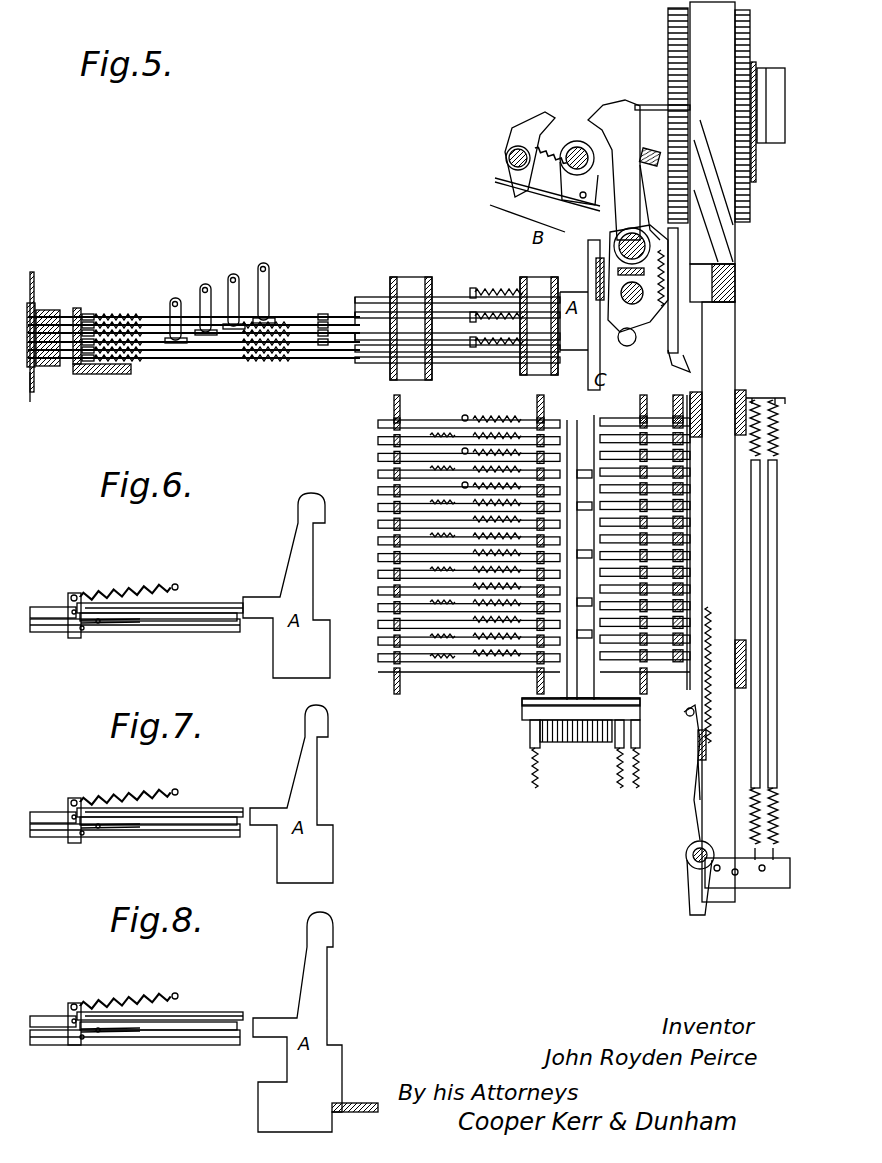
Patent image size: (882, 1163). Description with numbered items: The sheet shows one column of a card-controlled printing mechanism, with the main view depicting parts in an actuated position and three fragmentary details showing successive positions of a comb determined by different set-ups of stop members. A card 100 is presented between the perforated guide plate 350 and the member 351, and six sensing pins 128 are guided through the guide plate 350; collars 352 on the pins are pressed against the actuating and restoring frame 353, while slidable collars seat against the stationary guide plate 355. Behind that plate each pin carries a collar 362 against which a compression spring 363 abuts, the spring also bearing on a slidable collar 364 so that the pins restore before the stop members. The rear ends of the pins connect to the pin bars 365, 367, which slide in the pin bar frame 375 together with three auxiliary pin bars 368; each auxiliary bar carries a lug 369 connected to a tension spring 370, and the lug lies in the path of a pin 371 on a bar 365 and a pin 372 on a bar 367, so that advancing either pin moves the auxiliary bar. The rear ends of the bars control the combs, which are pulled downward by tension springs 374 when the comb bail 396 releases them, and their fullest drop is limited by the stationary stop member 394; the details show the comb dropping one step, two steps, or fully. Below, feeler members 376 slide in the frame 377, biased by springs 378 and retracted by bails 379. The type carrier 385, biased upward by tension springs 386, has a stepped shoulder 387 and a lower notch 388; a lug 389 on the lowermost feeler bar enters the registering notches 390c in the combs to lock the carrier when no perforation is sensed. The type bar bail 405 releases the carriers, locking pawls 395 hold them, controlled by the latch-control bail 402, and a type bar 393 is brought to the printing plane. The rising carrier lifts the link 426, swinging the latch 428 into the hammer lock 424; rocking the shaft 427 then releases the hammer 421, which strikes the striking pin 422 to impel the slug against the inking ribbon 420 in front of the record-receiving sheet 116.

In FIG. 5, the card 100 is at (36, 392).
In FIG. 5, the record-receiving card or sheet 116 is at (756, 182).
In FIG. 5, the pins 128 is at (82, 316).
In FIG. 5, the perforated guide plate 350 is at (48, 366).
In FIG. 5, the member 351 is at (25, 300).
In FIG. 5, the collars 352 is at (98, 318).
In FIG. 5, the actuating and restoring frame 353 is at (112, 374).
In FIG. 5, the stationary guide plate 355 is at (82, 310).
In FIG. 5, the collar 362 is at (320, 316).
In FIG. 5, the compression spring 363 is at (300, 352).
In FIG. 5, the slidable collar 364 is at (342, 318).
In FIG. 5, the pin bars 365 is at (450, 340).
In FIG. 6, the pin bars 365 is at (55, 620).
In FIG. 7, the pin bars 365 is at (60, 826).
In FIG. 8, the pin bars 365 is at (185, 1032).
In FIG. 5, the pin bars 367 is at (520, 360).
In FIG. 6, the pin bars 367 is at (195, 632).
In FIG. 7, the pin bars 367 is at (250, 838).
In FIG. 8, the pin bars 367 is at (215, 1042).
In FIG. 5, the auxiliary pin bars 368 is at (486, 340).
In FIG. 6, the auxiliary pin bars 368 is at (212, 603).
In FIG. 7, the auxiliary pin bars 368 is at (215, 808).
In FIG. 8, the auxiliary pin bars 368 is at (240, 1012).
In FIG. 6, the lug 369 is at (70, 596).
In FIG. 7, the lug 369 is at (72, 801).
In FIG. 8, the lug 369 is at (72, 1005).
In FIG. 5, the tension springs 370 is at (485, 418).
In FIG. 6, the tension springs 370 is at (155, 585).
In FIG. 7, the tension springs 370 is at (160, 788).
In FIG. 8, the tension springs 370 is at (160, 992).
In FIG. 6, the pin 371 is at (105, 622).
In FIG. 7, the pin 371 is at (105, 828).
In FIG. 8, the pin 371 is at (105, 1032).
In FIG. 6, the pin 372 is at (85, 640).
In FIG. 7, the pin 372 is at (85, 844).
In FIG. 8, the pin 372 is at (90, 1046).
In FIG. 5, the tension springs 374 is at (535, 788).
In FIG. 5, the pin bar frame 375 is at (398, 278).
In FIG. 5, the feeler members 376 is at (438, 630).
In FIG. 5, the frame 377 is at (396, 694).
In FIG. 5, the springs 378 is at (492, 630).
In FIG. 5, the bails 379 is at (460, 451).
In FIG. 5, the type carrier 385 is at (726, 348).
In FIG. 5, the tension springs 386 is at (780, 860).
In FIG. 5, the stepped shoulder 387 is at (703, 520).
In FIG. 5, the lower notch 388 is at (705, 550).
In FIG. 5, the lug 389 is at (665, 672).
In FIG. 5, the notches 390c is at (585, 690).
In FIG. 5, the type bars 393 is at (735, 100).
In FIG. 8, the stationary stop member 394 is at (355, 1103).
In FIG. 5, the locking pawls 395 is at (690, 712).
In FIG. 5, the comb bail 396 is at (490, 205).
In FIG. 5, the latch-control bail 402 is at (698, 745).
In FIG. 5, the type bar bail 405 is at (685, 852).
In FIG. 5, the inking ribbon 420 is at (755, 62).
In FIG. 5, the hammer 421 is at (610, 105).
In FIG. 5, the striking pin 422 is at (642, 105).
In FIG. 5, the latch 424 is at (520, 126).
In FIG. 5, the link 426 is at (682, 297).
In FIG. 5, the shaft 427 is at (577, 140).
In FIG. 5, the latch 428 is at (495, 180).